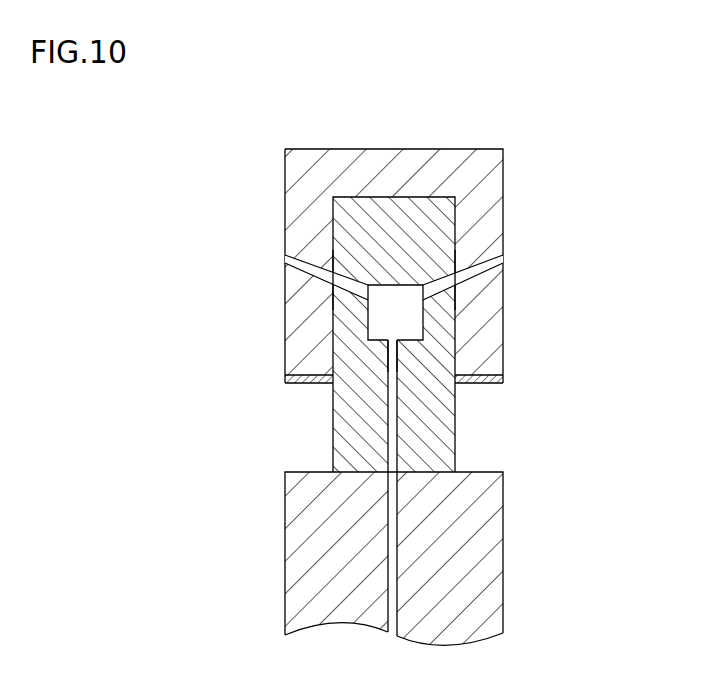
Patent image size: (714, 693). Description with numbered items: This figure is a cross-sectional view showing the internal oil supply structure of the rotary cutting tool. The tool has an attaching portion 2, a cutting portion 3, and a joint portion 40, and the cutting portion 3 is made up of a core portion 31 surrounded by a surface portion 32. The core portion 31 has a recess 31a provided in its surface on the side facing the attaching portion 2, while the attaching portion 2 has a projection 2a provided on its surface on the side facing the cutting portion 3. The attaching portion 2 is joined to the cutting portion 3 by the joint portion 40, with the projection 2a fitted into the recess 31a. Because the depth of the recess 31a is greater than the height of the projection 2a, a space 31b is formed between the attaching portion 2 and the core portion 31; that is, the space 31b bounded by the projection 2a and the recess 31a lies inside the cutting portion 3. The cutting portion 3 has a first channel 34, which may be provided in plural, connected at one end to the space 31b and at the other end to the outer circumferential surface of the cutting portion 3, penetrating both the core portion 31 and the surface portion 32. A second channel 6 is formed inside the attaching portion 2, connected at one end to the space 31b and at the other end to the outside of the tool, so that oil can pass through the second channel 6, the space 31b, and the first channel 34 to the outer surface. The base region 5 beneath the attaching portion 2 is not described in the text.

The cutting portion 3 is at (577, 203).
The core portion 31 is at (418, 223).
The recess 31a is at (363, 327).
The space 31b is at (407, 327).
The surface portion 32 is at (473, 293).
The first channel 34 is at (301, 276).
The joint portion 40 is at (504, 379).
The attaching portion 2 is at (456, 424).
The projection 2a is at (377, 362).
The second channel 6 is at (386, 437).
The base 5 is at (504, 540).